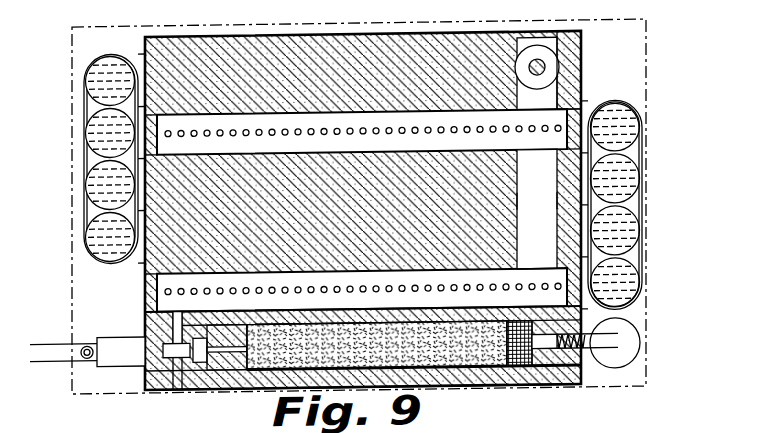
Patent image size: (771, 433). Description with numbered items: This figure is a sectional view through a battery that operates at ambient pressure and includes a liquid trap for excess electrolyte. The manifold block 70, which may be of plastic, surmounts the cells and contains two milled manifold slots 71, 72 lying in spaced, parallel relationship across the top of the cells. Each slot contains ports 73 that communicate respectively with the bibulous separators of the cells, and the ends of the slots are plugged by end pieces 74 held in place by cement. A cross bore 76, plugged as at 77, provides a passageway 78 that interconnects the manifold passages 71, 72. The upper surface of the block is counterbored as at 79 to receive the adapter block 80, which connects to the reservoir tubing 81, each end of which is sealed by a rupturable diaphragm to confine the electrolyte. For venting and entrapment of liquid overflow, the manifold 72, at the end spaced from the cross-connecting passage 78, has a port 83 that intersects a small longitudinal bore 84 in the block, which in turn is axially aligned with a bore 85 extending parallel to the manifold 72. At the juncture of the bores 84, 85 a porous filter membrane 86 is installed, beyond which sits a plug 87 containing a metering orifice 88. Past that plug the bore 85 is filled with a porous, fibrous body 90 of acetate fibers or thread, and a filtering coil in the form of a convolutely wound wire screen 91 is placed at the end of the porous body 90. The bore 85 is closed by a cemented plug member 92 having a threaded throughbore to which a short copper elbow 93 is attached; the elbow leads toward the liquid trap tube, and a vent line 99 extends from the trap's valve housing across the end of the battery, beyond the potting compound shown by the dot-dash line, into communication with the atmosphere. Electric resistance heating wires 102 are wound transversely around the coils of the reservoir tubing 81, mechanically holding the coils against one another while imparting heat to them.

The manifold block 70 is at (146, 36).
The manifold slot 71 is at (537, 209).
The manifold slot 72 is at (525, 276).
The ports 73 is at (323, 134).
The end pieces 74 is at (565, 107).
The cross bore 76 is at (578, 36).
The plug 77 is at (527, 34).
The passageway 78 is at (555, 202).
The counterbore 79 is at (560, 70).
The adapter block 80 is at (574, 432).
The reservoir tubing 81 is at (645, 164).
The port 83 is at (148, 311).
The longitudinal bore 84 is at (161, 386).
The bore 85 is at (548, 388).
The porous filter membrane 86 is at (204, 386).
The plug 87 is at (221, 386).
The metering orifice 88 is at (246, 386).
The porous fibrous body 90 is at (473, 387).
The wire screen 91 is at (517, 388).
The plug member 92 is at (573, 388).
The copper elbow 93 is at (618, 352).
The vent line 99 is at (97, 341).
The heating wires 102 is at (84, 212).